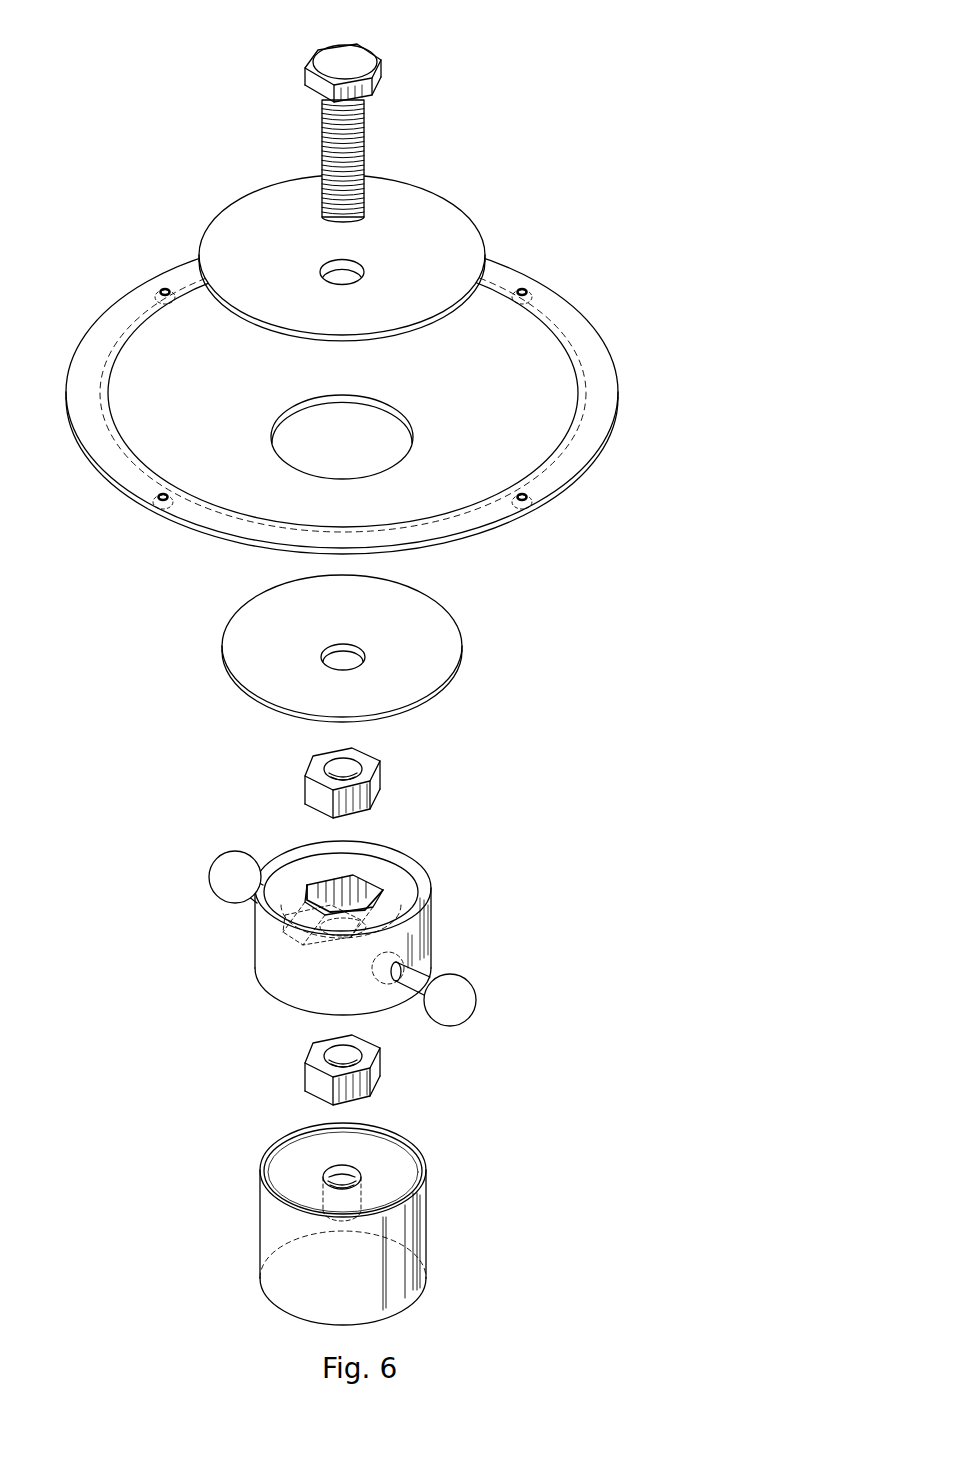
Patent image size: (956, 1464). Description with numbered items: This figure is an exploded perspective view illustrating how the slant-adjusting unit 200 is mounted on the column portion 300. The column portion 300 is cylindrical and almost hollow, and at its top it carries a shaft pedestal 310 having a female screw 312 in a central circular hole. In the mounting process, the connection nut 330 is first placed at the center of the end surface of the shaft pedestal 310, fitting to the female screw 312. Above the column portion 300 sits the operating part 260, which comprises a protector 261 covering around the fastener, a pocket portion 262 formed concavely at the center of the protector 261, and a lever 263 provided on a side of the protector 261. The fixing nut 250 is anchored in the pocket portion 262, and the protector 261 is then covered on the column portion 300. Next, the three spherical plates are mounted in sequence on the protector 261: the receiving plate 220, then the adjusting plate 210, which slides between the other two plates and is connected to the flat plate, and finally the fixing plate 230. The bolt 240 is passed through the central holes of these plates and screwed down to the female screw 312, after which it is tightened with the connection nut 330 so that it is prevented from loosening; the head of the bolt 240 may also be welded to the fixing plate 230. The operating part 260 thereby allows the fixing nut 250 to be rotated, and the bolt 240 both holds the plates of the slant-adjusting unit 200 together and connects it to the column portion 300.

The slant-adjusting unit 200 is at (408, 128).
The adjusting plate 210 is at (538, 424).
The receiving plate 220 is at (437, 642).
The fixing plate 230 is at (450, 223).
The bolt 240 is at (355, 57).
The fixing nut 250 is at (382, 782).
The operating part 260 is at (349, 927).
The protector 261 is at (418, 880).
The pocket portion 262 is at (363, 890).
The lever 263 is at (215, 880).
The column portion 300 is at (407, 1206).
The shaft pedestal 310 is at (378, 1145).
The female screw 312 is at (357, 1168).
The connection nut 330 is at (377, 1059).